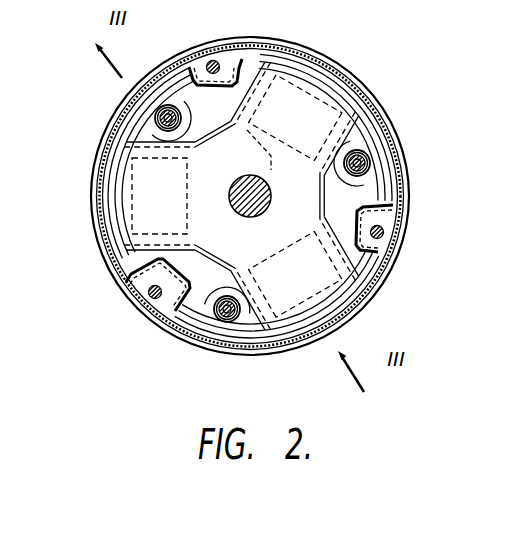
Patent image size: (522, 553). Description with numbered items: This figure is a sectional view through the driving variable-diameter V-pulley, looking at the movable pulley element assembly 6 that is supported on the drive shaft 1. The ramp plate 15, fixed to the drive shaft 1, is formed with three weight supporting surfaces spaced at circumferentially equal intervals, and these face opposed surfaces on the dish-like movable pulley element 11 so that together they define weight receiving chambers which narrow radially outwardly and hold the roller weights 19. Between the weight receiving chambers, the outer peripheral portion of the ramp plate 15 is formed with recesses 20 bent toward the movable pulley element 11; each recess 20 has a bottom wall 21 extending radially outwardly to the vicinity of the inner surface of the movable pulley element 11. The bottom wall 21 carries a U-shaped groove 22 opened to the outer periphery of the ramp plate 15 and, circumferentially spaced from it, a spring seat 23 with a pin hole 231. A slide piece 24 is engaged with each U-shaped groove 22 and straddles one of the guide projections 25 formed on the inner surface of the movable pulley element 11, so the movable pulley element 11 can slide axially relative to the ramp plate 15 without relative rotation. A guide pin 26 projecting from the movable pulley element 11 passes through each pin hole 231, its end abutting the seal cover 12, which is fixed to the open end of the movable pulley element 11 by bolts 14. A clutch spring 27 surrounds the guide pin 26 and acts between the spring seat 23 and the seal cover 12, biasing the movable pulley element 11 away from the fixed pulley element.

The drive shaft 1 is at (243, 217).
The movable pulley element assembly 6 is at (97, 183).
The movable pulley element 11 is at (318, 56).
The seal cover 12 is at (357, 81).
The bolt 14 is at (212, 61).
The ramp plate 15 is at (318, 88).
The roller weight 19 is at (192, 184).
The recess 20 is at (210, 113).
The bottom wall 21 is at (254, 68).
The U-shaped groove 22 is at (237, 196).
The spring seat 23 is at (155, 113).
The pin hole 231 is at (403, 126).
The slide piece 24 is at (195, 70).
The guide projection 25 is at (230, 72).
The guide pin 26 is at (161, 110).
The clutch spring 27 is at (168, 133).